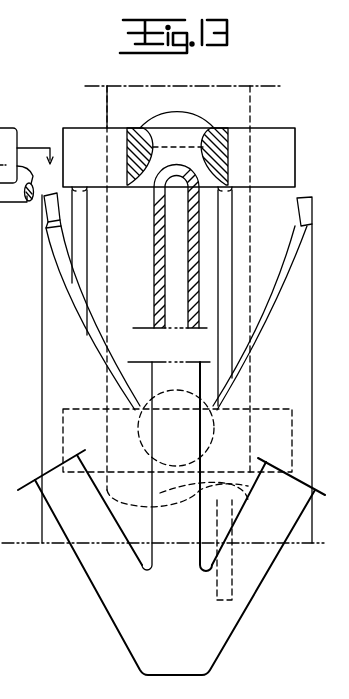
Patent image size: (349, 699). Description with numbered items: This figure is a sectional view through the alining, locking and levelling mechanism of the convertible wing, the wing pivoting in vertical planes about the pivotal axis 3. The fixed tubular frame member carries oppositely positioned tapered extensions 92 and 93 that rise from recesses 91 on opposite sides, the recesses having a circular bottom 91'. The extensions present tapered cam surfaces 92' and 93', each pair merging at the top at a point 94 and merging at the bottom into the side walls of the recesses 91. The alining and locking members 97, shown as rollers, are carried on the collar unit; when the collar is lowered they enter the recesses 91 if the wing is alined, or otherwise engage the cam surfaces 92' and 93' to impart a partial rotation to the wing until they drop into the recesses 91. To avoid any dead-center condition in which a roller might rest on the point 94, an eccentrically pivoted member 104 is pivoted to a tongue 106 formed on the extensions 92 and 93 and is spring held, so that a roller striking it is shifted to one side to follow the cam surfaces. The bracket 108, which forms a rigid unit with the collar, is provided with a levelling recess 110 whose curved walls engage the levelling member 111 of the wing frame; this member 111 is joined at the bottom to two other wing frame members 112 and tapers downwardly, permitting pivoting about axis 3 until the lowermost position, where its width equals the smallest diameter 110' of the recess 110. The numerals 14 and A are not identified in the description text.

The pivotal axis 3 is at (187, 183).
The control unit 14 is at (28, 165).
The recess 91 is at (129, 466).
The circular bottom 91' is at (218, 466).
The tapered extension 92 is at (29, 369).
The tapered cam surface 92' is at (76, 318).
The tapered extension 93 is at (316, 383).
The tapered cam surface 93' is at (260, 318).
The merging point 94 is at (36, 204).
The alining and locking member 97 is at (179, 112).
The eccentrically pivoted member 104 is at (44, 216).
The tongue 106 is at (44, 236).
The bracket 108 is at (252, 117).
The levelling recess 110 is at (183, 138).
The smallest diameter of levelling recess 110' is at (86, 107).
The levelling member 111 is at (155, 260).
The wing frame member 112 is at (71, 545).
The direction of movement A is at (128, 488).